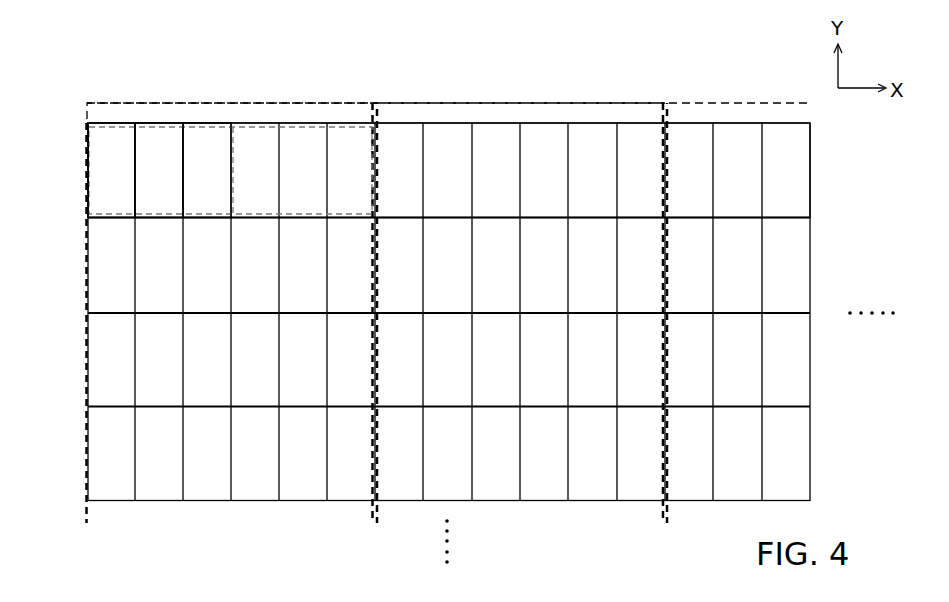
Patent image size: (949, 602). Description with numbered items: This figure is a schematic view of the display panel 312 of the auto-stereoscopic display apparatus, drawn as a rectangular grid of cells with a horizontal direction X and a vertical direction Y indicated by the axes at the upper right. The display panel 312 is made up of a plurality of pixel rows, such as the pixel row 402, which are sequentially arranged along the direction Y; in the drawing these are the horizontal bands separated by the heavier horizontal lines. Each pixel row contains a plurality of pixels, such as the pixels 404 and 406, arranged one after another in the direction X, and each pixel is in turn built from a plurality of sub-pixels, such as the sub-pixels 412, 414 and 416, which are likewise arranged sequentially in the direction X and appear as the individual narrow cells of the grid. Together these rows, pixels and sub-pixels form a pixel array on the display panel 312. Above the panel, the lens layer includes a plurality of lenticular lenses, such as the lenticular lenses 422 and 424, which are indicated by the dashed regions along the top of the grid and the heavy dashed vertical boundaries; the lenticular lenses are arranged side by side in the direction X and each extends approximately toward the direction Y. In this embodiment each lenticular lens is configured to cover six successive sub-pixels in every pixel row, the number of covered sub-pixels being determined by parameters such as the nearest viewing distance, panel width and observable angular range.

The display panel 312 is at (80, 92).
The pixel row 402 is at (819, 167).
The pixel 404 is at (86, 197).
The pixel 406 is at (309, 122).
The sub-pixel 412 is at (128, 180).
The sub-pixel 414 is at (176, 180).
The sub-pixel 416 is at (224, 180).
The lenticular lens 422 is at (233, 100).
The lenticular lens 424 is at (523, 100).